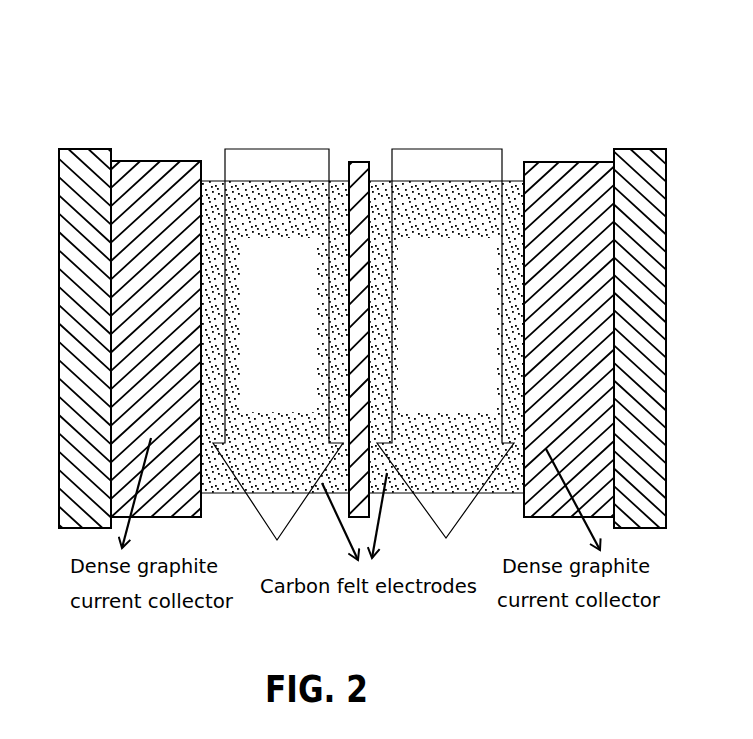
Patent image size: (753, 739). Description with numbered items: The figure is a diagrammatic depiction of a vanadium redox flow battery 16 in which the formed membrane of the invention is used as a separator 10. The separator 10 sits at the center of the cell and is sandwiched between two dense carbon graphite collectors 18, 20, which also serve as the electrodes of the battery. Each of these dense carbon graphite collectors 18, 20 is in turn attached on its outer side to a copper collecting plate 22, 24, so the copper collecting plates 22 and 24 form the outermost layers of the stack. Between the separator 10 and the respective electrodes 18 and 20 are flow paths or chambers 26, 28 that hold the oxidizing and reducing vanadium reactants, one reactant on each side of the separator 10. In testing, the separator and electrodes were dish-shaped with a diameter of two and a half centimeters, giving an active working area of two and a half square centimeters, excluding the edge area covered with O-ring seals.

The vanadium redox flow battery 16 is at (362, 281).
The copper collecting plate 22 is at (86, 149).
The dense carbon graphite collector 18 is at (163, 161).
The flow path or chamber 26 is at (268, 149).
The separator 10 is at (357, 158).
The flow path or chamber 28 is at (458, 149).
The dense carbon graphite collector 20 is at (550, 162).
The copper collecting plate 24 is at (641, 149).